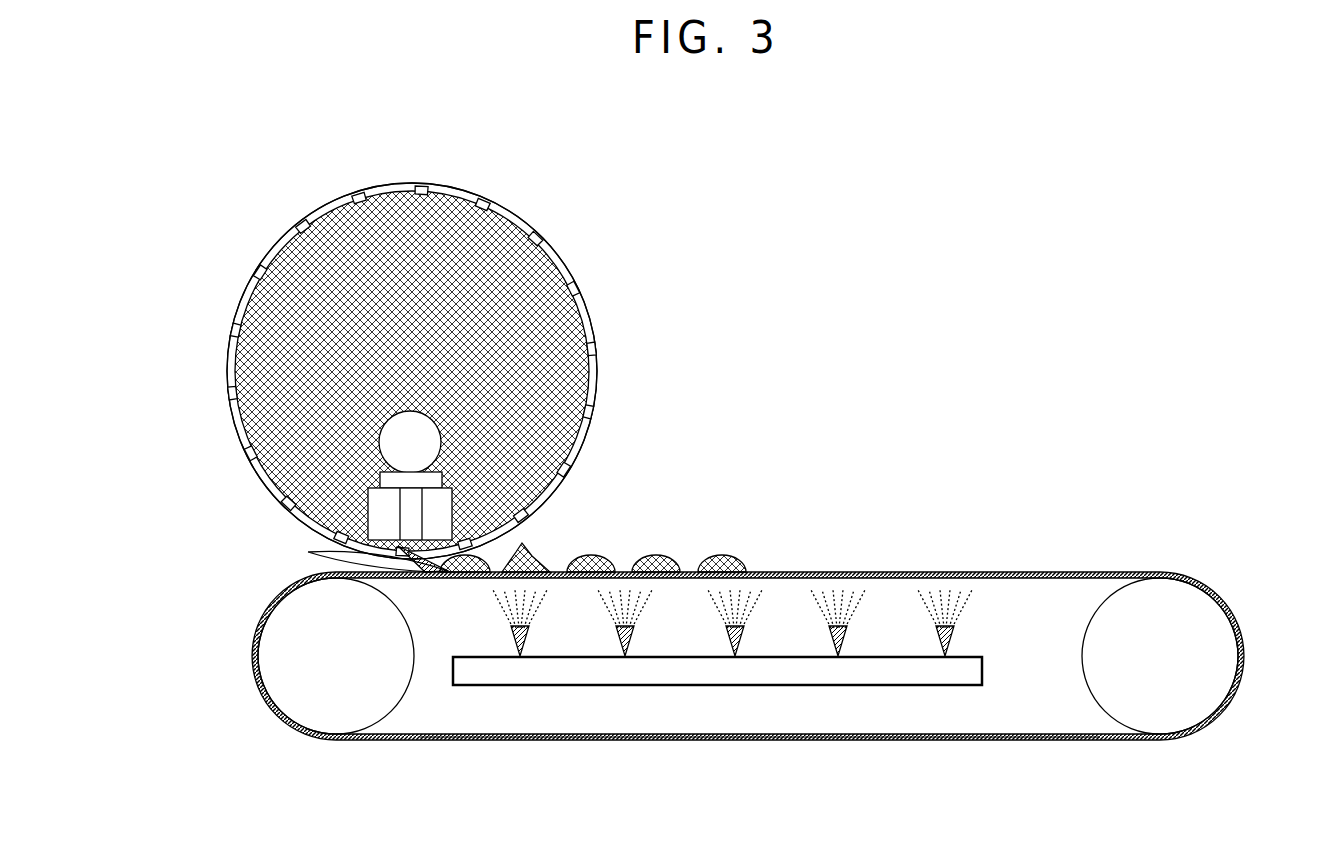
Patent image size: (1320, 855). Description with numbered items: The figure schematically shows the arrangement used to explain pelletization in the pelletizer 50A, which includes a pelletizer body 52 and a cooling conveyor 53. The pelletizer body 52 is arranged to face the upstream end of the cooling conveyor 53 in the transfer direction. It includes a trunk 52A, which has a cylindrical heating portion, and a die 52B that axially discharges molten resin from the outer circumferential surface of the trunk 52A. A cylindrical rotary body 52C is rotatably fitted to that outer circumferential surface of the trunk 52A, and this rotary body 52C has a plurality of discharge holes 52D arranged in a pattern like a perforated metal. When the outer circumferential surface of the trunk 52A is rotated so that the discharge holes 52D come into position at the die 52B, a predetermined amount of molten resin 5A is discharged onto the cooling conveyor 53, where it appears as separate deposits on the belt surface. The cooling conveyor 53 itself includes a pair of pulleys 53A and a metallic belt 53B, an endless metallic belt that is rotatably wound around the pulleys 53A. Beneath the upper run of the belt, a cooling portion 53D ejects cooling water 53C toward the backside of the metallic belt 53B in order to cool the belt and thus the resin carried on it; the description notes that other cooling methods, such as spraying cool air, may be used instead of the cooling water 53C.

The pelletizer 50A is at (840, 330).
The pelletizer body 52 is at (452, 188).
The trunk 52A is at (510, 226).
The die 52B is at (372, 507).
The rotary body 52C is at (575, 258).
The discharge holes 52D is at (422, 186).
The molten resin 5A is at (552, 566).
The cooling conveyor 53 is at (1035, 571).
The pulleys 53A is at (322, 740).
The metallic belt 53B is at (636, 742).
The cooling water 53C is at (608, 620).
The cooling portion 53D is at (899, 688).